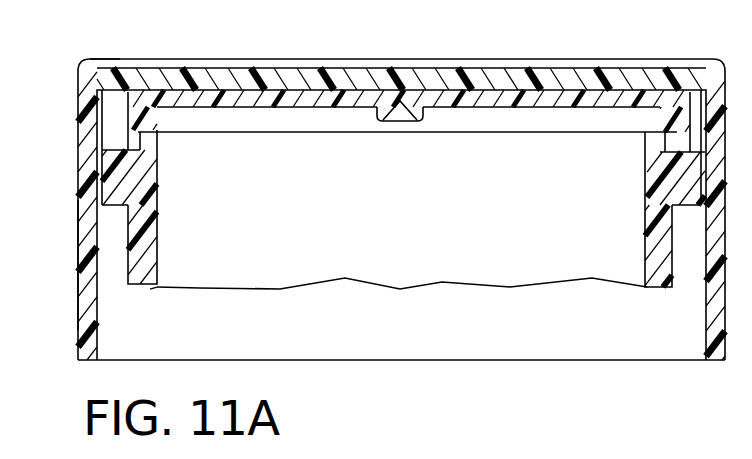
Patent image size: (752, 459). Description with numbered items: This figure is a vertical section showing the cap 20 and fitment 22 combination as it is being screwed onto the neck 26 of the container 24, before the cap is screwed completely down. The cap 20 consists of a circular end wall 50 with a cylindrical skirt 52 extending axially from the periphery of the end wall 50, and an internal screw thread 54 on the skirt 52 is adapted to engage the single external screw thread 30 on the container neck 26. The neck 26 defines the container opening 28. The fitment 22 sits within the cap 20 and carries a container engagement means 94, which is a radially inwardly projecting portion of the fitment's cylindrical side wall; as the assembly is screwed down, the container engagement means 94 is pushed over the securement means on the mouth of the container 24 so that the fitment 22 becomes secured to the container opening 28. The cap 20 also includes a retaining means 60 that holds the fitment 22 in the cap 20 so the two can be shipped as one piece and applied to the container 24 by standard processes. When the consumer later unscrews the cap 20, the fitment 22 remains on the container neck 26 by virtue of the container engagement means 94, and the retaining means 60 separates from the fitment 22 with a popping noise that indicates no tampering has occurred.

The cap 20 is at (529, 58).
The fitment 22 is at (322, 88).
The container 24 is at (151, 288).
The neck 26 is at (156, 282).
The container opening 28 is at (251, 120).
The external screw thread 30 is at (155, 214).
The end wall 50 is at (113, 60).
The skirt 52 is at (78, 314).
The internal screw thread 54 is at (108, 228).
The retaining means 60 is at (408, 106).
The container engagement means 94 is at (140, 125).